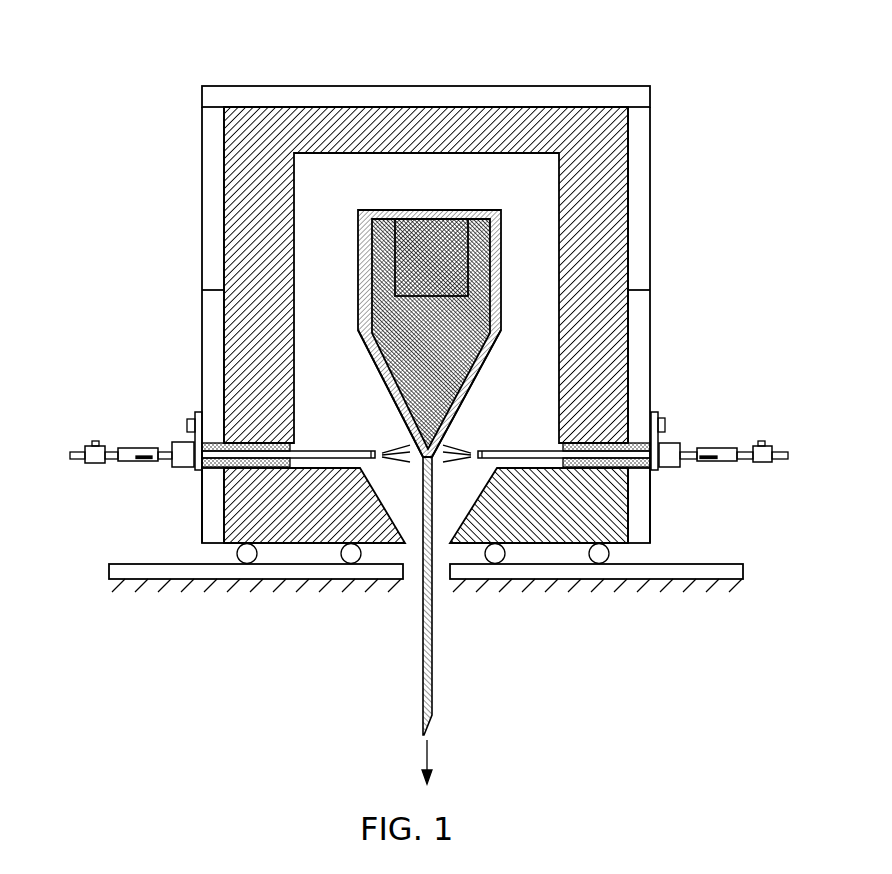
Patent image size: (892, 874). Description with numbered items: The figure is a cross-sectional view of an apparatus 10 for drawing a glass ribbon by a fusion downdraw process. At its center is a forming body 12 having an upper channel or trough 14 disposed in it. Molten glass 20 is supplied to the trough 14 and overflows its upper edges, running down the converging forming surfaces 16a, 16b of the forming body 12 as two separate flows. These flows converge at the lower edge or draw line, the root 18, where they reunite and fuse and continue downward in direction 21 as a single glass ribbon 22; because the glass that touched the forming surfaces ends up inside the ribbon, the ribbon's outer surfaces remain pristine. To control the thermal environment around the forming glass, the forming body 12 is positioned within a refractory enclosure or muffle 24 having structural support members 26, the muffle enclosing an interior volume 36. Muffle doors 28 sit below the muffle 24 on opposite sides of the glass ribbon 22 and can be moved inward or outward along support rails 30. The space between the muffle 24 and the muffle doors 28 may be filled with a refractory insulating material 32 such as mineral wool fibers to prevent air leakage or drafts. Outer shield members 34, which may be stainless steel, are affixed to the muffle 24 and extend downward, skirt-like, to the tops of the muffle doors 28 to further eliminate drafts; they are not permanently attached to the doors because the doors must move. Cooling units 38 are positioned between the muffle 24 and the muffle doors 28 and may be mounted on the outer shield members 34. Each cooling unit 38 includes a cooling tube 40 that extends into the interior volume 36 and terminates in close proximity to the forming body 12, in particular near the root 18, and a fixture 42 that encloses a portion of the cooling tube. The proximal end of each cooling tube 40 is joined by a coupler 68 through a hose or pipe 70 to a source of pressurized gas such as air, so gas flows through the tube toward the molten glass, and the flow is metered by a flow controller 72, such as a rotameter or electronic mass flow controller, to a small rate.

The apparatus 10 is at (690, 169).
The forming body 12 is at (362, 310).
The trough 14 is at (393, 234).
The converging forming surface 16a is at (387, 370).
The converging forming surface 16b is at (477, 366).
The root 18 is at (424, 466).
The molten glass 20 is at (425, 210).
The direction 21 is at (427, 752).
The glass ribbon 22 is at (433, 637).
The muffle 24 is at (362, 118).
The structural support members 26 is at (200, 323).
The muffle doors 28 is at (195, 510).
The support rails 30 is at (112, 564).
The refractory insulating material 32 is at (490, 467).
The outer shield members 34 is at (197, 412).
The interior volume 36 is at (518, 261).
The cooling units 38 is at (158, 433).
The cooling tube 40 is at (318, 450).
The fixture 42 is at (183, 468).
The coupler 68 is at (127, 448).
The hose or pipe 70 is at (93, 445).
The flow controller 72 is at (93, 466).